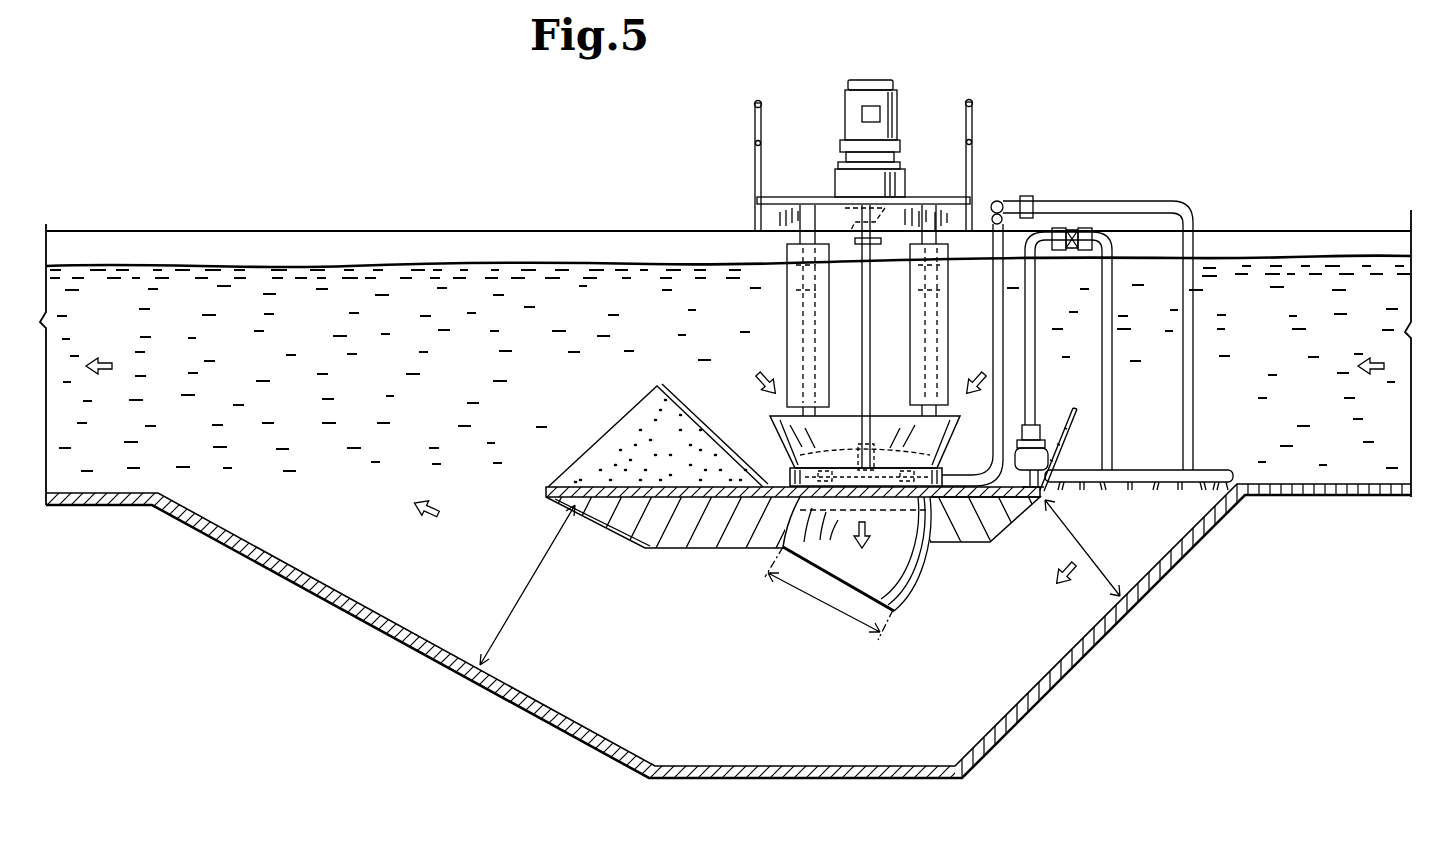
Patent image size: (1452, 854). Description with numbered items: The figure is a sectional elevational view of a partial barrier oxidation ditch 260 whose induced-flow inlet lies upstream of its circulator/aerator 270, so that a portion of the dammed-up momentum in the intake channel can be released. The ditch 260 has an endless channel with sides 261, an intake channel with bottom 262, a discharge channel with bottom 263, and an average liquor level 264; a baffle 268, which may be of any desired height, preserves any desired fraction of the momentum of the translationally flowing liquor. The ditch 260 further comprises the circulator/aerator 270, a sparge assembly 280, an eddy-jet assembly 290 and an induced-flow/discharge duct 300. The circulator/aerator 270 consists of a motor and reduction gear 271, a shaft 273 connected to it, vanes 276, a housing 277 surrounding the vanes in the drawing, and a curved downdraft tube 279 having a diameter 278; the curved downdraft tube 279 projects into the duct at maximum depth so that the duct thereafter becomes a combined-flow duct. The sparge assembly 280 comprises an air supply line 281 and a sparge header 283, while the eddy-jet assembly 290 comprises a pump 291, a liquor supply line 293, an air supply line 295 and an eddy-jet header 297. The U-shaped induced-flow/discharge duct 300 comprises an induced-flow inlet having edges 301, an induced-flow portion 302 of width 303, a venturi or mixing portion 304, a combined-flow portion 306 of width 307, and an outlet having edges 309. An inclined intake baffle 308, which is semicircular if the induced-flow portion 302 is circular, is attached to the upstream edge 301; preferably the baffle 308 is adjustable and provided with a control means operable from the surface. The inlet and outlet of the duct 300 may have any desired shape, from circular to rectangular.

The partial barrier oxidation ditch 260 is at (460, 224).
The sides 261 is at (322, 231).
The intake channel bottom 262 is at (1350, 484).
The discharge channel bottom 263 is at (102, 492).
The average liquor level 264 is at (1280, 256).
The baffle 268 is at (694, 394).
The circulator/aerator 270 is at (927, 104).
The motor and reduction gear 271 is at (844, 106).
The shaft 273 is at (864, 322).
The vanes 276 is at (966, 312).
The hopper 277 is at (770, 422).
The diameter 278 is at (809, 602).
The curved downdraft tube 279 is at (930, 584).
The sparge assembly 280 is at (1009, 184).
The air supply line 281 is at (998, 325).
The sparge header 283 is at (790, 471).
The eddy-jet assembly 290 is at (1115, 193).
The pump 291 is at (1018, 456).
The liquor supply line 293 is at (1110, 328).
The air supply line 295 is at (1194, 336).
The eddy-jet header 297 is at (1214, 470).
The induced-flow/discharge duct 300 is at (1068, 684).
The induced-flow inlet edges 301 is at (1044, 490).
The induced-flow portion 302 is at (1012, 534).
The width 303 is at (1082, 548).
The venturi or mixing portion 304 is at (700, 548).
The combined-flow portion 306 is at (590, 518).
The width 307 is at (515, 585).
The inclined intake baffle 308 is at (1086, 427).
The outlet edges 309 is at (166, 492).